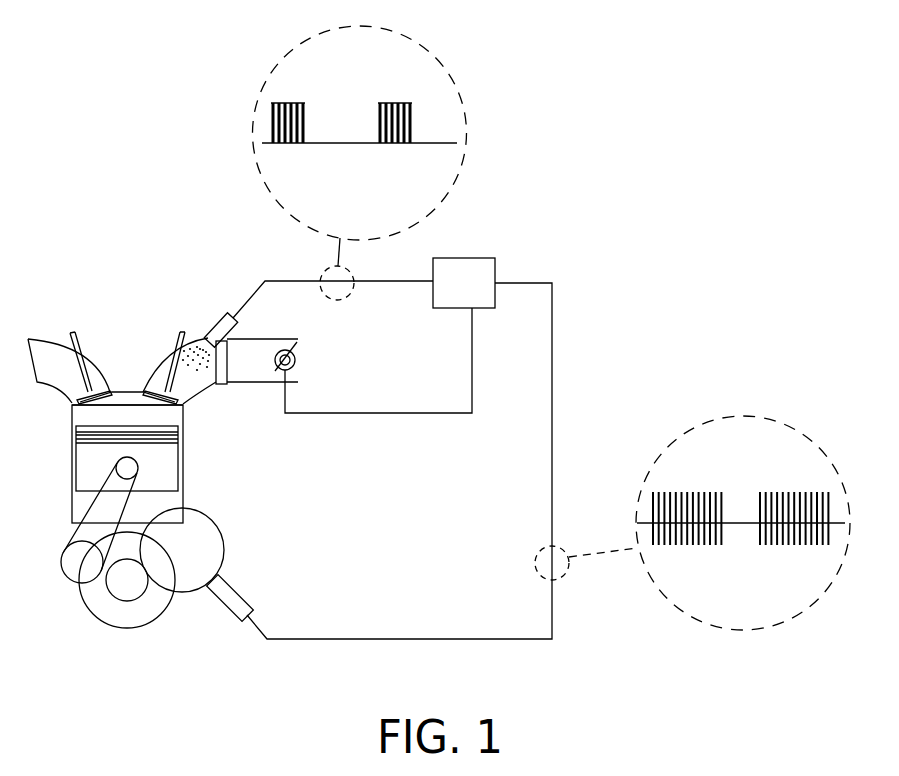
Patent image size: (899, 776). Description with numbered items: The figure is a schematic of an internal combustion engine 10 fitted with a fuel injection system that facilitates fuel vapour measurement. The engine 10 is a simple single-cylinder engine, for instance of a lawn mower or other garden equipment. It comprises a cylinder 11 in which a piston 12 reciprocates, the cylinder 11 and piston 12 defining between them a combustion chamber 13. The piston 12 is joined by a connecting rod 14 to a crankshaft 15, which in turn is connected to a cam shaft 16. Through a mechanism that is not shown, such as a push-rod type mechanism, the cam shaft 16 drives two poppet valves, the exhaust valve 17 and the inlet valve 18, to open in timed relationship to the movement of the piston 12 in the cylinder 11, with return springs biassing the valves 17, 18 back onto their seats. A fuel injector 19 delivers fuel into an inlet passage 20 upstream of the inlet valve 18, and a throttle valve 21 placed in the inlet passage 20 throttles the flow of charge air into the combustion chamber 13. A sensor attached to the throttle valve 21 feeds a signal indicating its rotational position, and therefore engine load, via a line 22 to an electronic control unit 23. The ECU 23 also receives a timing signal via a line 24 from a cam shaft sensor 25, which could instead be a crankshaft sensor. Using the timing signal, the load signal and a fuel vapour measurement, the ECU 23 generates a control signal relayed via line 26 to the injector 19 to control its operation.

The internal combustion engine 10 is at (97, 165).
The cylinder 11 is at (72, 413).
The piston 12 is at (163, 465).
The combustion chamber 13 is at (163, 415).
The connecting rod 14 is at (62, 558).
The crankshaft 15 is at (97, 615).
The cam shaft 16 is at (222, 533).
The exhaust valve 17 is at (78, 330).
The inlet valve 18 is at (180, 330).
The fuel injector 19 is at (222, 317).
The inlet passage 20 is at (237, 367).
The throttle valve 21 is at (293, 348).
The line 22 is at (398, 413).
The electronic control unit 23 is at (497, 258).
The line 24 is at (553, 327).
The cam shaft sensor 25 is at (245, 606).
The line 26 is at (265, 281).